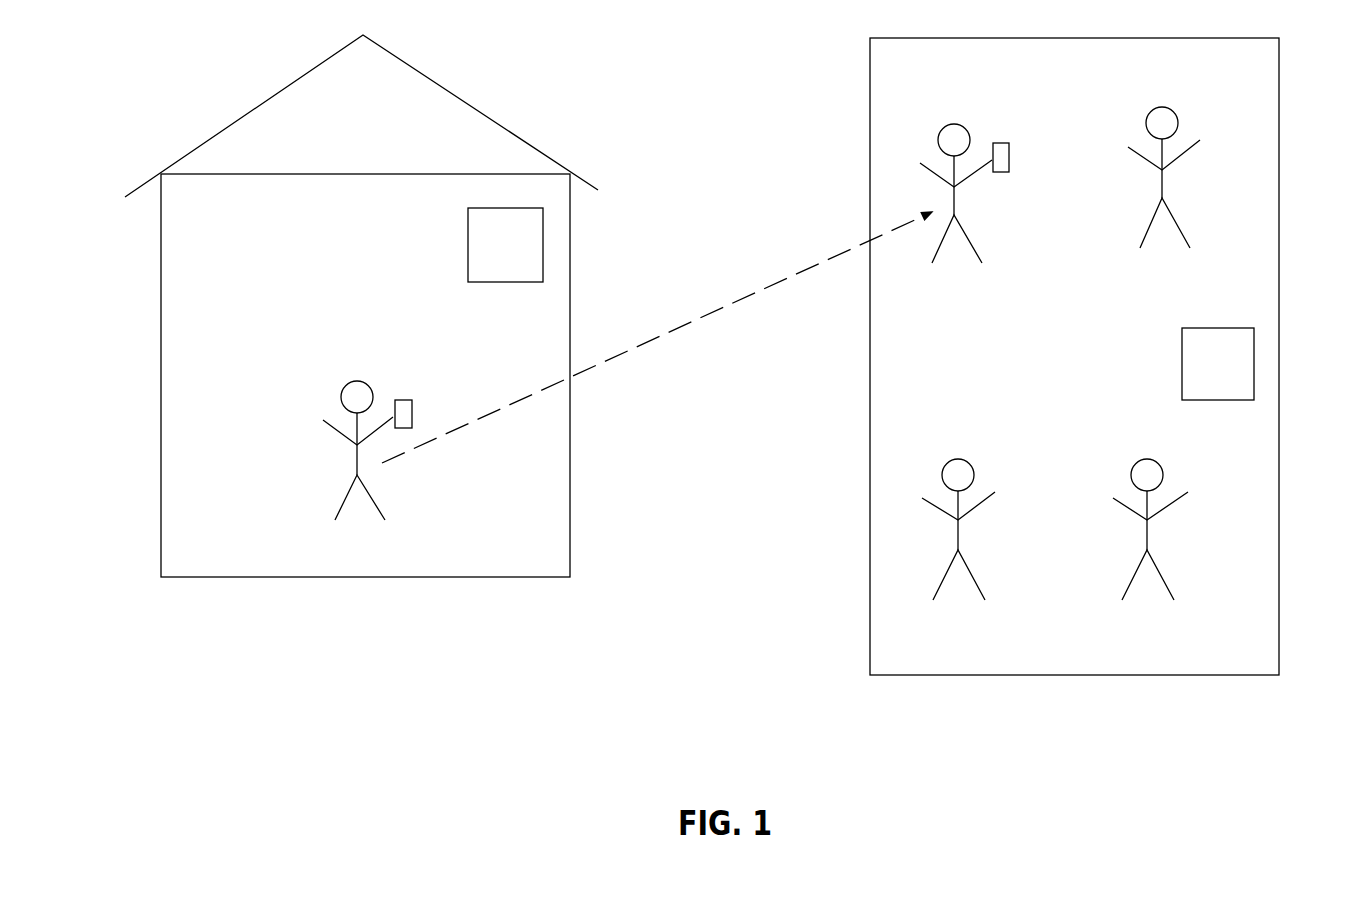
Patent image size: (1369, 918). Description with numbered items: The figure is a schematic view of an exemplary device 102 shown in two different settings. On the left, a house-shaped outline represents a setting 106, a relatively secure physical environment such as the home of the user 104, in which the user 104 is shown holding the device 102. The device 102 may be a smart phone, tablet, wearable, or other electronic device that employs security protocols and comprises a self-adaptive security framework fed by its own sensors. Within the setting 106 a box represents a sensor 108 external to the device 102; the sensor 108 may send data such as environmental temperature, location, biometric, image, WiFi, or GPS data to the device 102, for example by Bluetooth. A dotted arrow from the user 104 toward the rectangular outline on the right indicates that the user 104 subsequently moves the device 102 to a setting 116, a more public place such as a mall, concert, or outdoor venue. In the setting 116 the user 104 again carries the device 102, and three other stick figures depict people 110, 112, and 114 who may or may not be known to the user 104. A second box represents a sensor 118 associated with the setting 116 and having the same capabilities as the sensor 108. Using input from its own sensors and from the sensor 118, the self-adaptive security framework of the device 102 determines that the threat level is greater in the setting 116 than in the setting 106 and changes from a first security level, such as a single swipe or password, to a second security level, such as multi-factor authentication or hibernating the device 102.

The device 102 is at (405, 400).
The user 104 is at (373, 493).
The setting 106 is at (355, 577).
The sensor 108 is at (543, 250).
The people 110 is at (972, 570).
The people 112 is at (1162, 570).
The people 114 is at (1177, 218).
The setting 116 is at (1063, 675).
The sensor 118 is at (1254, 370).